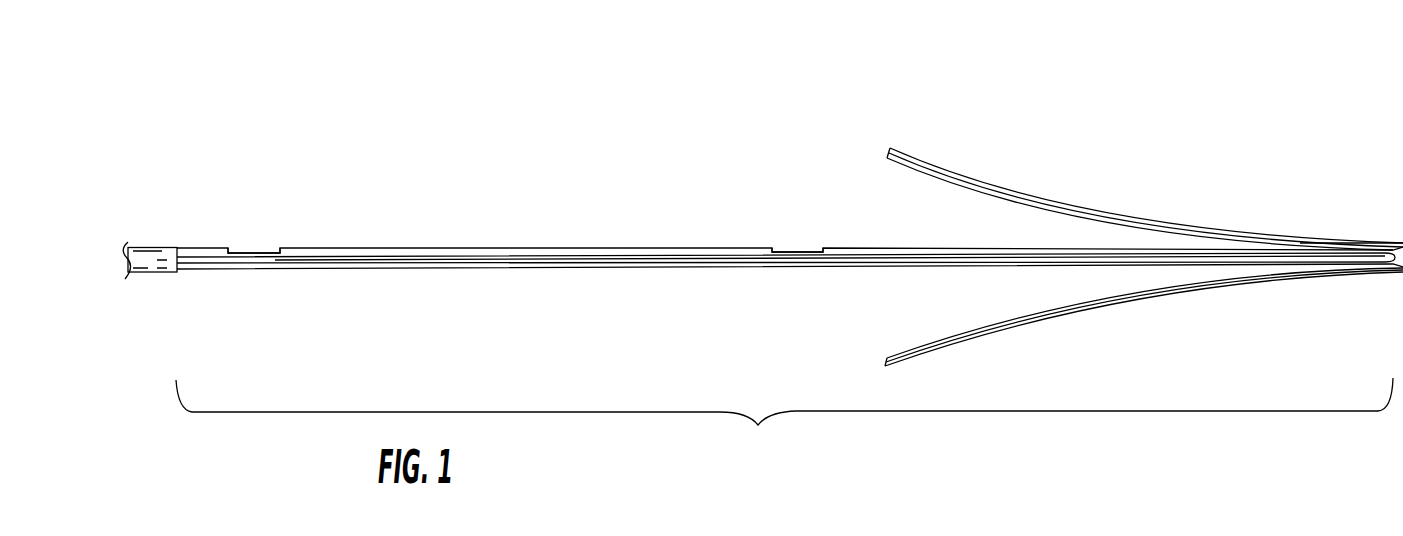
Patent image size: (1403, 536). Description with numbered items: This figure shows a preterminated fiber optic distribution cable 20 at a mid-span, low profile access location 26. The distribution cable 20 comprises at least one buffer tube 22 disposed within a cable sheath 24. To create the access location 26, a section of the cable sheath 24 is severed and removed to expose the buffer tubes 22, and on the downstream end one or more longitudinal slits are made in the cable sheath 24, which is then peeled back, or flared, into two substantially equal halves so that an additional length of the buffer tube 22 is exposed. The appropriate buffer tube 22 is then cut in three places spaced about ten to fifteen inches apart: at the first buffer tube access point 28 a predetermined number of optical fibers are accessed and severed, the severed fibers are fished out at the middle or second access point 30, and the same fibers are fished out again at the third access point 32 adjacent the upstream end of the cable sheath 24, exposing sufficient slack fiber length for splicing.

The fiber optic distribution cable 20 is at (572, 104).
The buffer tube 22 is at (348, 255).
The cable sheath 24 is at (152, 253).
The access location 26 is at (784, 419).
The first buffer tube access point 28 is at (1226, 230).
The second access point 30 is at (798, 232).
The third access point 32 is at (249, 234).